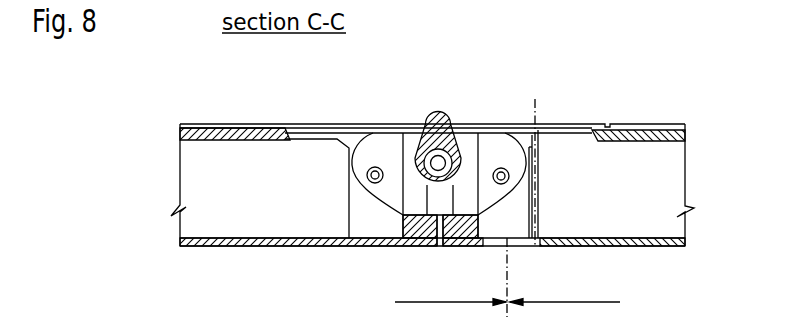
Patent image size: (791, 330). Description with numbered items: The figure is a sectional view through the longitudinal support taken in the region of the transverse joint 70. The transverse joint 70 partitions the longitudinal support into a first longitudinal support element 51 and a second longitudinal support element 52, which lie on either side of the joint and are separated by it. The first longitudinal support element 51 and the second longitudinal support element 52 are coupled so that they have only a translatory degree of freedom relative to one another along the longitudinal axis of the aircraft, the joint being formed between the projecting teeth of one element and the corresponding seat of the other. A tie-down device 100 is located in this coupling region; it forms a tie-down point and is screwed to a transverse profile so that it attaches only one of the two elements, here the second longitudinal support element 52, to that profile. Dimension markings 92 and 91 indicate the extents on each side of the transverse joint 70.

The second longitudinal support element 52 is at (223, 158).
The first longitudinal support element 51 is at (638, 158).
The tie-down device 100 is at (437, 123).
The transverse joint 70 is at (548, 94).
The left section dimension 92 is at (420, 293).
The right section dimension 91 is at (614, 293).